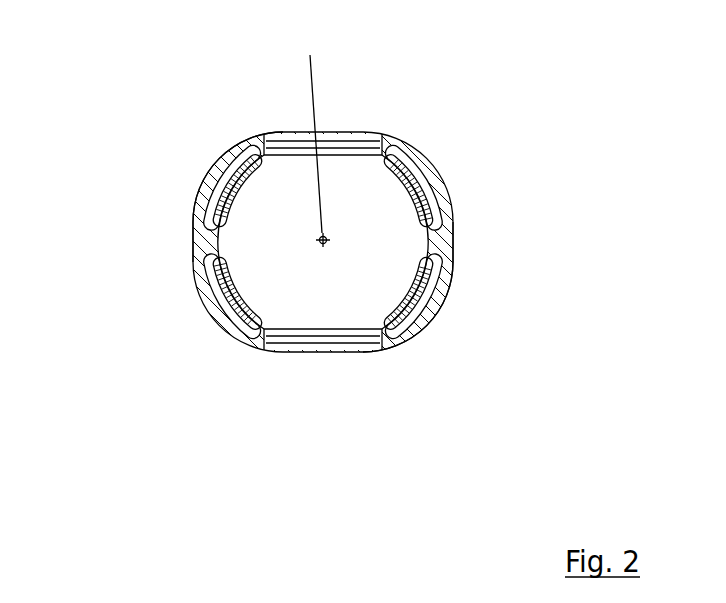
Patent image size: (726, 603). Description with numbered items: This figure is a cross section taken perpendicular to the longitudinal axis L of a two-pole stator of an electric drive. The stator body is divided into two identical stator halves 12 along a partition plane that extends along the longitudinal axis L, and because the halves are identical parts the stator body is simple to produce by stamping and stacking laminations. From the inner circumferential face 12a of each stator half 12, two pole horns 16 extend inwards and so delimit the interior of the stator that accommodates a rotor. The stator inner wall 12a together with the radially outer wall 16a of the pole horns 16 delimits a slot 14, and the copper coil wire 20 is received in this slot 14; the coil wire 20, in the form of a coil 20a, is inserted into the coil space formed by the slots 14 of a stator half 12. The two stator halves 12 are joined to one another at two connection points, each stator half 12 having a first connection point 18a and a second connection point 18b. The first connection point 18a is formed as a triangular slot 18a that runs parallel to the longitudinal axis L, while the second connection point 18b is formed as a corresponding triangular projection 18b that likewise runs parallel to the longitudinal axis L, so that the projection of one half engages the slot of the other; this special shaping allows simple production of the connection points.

The stator half 12 is at (428, 159).
The inner circumferential face 12a is at (413, 338).
The slot 14 is at (273, 348).
The pole horn 16 is at (278, 131).
The radially outer wall of the pole horn 16a is at (229, 344).
The first connection point 18a is at (193, 210).
The second connection point 18b is at (195, 243).
The coil wire 20 is at (210, 317).
The coil 20a is at (443, 180).
The longitudinal axis L is at (318, 137).